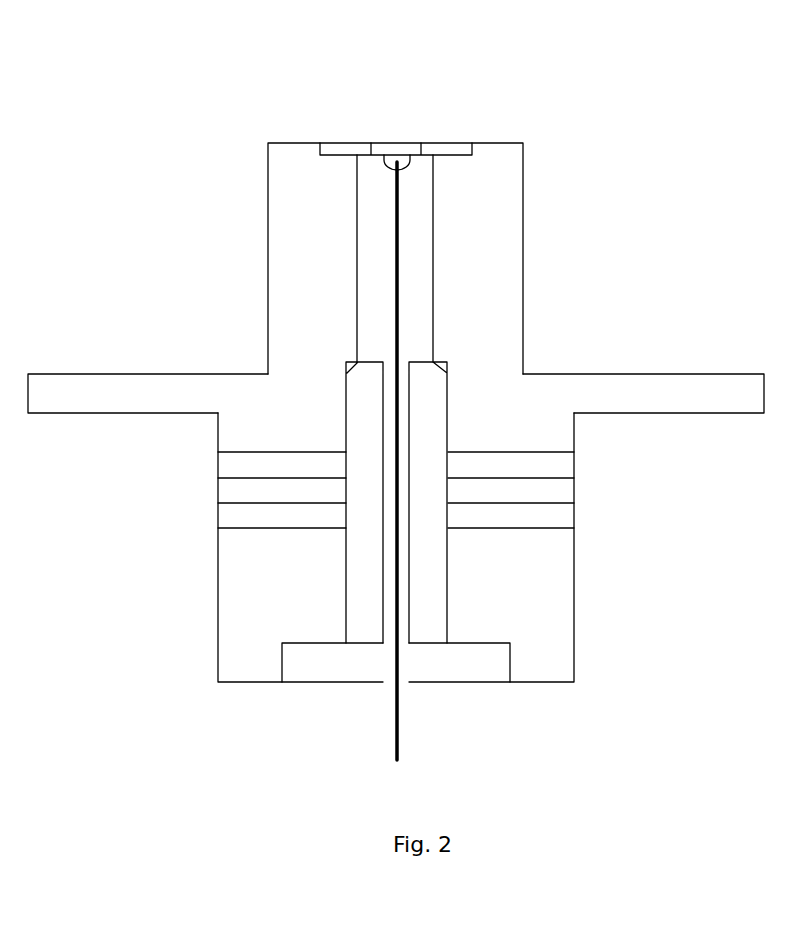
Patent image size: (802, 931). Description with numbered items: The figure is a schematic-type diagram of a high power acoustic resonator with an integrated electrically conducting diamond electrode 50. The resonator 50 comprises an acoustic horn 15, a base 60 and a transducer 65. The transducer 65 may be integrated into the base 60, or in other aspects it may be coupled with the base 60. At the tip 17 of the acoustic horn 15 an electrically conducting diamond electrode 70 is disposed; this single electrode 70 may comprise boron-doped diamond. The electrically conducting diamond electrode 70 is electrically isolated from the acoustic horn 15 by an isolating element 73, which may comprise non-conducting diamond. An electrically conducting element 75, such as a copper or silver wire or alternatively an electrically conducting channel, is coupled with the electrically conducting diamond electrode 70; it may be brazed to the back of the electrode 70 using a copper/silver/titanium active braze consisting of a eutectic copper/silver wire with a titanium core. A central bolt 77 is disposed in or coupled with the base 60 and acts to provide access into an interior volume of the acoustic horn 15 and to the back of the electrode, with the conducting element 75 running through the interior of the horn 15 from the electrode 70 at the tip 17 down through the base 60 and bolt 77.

The high power acoustic resonator with an integrated electrically conducting diamond 50 is at (396, 399).
The acoustic horn 15 is at (325, 306).
The tip 17 is at (276, 143).
The base 60 is at (218, 588).
The transducer 65 is at (574, 465).
The electrically conducting diamond electrode 70 is at (393, 143).
The isolating element 73 is at (443, 143).
The electrically conducting element 75 is at (396, 235).
The central bolt 77 is at (323, 682).